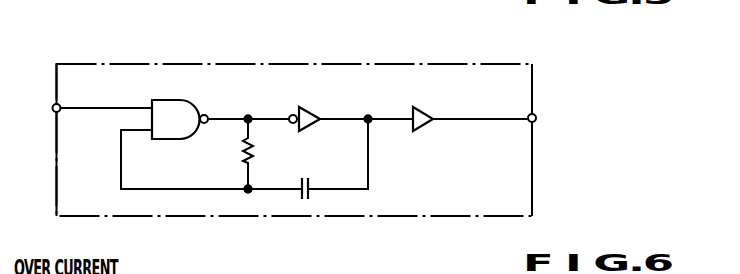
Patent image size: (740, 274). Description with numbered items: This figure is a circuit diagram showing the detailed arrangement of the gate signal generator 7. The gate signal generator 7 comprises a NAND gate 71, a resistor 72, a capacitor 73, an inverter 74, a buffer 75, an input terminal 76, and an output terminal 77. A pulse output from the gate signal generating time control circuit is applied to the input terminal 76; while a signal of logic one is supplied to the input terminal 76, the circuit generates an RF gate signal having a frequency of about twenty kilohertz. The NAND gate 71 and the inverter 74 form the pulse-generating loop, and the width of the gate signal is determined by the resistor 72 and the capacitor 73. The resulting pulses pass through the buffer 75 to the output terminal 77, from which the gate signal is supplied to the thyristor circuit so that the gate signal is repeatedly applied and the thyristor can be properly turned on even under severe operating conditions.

The gate signal generator 7 is at (163, 64).
The NAND gate 71 is at (201, 79).
The resistor 72 is at (241, 148).
The capacitor 73 is at (315, 180).
The inverter 74 is at (314, 107).
The buffer 75 is at (421, 106).
The input terminal 76 is at (53, 113).
The output terminal 77 is at (535, 121).